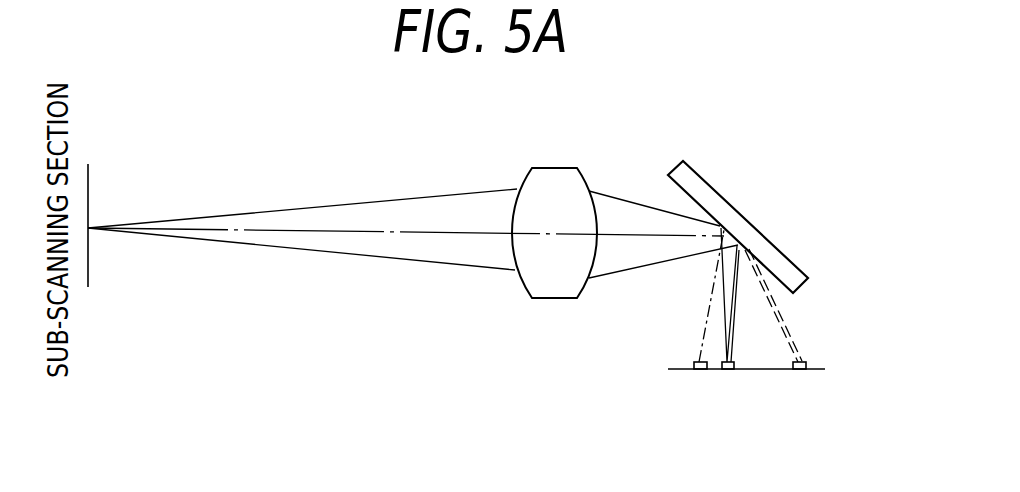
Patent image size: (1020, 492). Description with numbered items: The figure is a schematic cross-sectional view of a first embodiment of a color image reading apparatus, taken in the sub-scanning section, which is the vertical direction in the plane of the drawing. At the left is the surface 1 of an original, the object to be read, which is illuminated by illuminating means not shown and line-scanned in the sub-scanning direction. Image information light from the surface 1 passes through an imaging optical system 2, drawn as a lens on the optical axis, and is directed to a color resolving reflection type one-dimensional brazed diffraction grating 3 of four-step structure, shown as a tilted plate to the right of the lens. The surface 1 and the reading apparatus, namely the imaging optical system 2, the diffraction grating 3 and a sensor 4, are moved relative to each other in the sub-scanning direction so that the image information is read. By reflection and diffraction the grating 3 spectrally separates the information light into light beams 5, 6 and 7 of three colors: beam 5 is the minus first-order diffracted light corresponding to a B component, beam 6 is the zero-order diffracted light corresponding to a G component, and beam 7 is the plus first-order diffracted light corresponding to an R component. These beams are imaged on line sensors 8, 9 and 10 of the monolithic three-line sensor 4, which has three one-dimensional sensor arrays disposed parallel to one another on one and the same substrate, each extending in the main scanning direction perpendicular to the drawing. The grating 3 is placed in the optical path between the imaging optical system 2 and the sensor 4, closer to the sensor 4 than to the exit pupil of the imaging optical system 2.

The surface of an original 1 is at (88, 176).
The imaging optical system 2 is at (565, 182).
The one-dimensional brazed diffraction grating 3 is at (702, 188).
The sensor 4 is at (818, 369).
The light beam 5 is at (709, 300).
The light beam 6 is at (735, 305).
The light beam 7 is at (775, 308).
The line sensor 8 is at (697, 371).
The line sensor 9 is at (728, 371).
The line sensor 10 is at (803, 371).